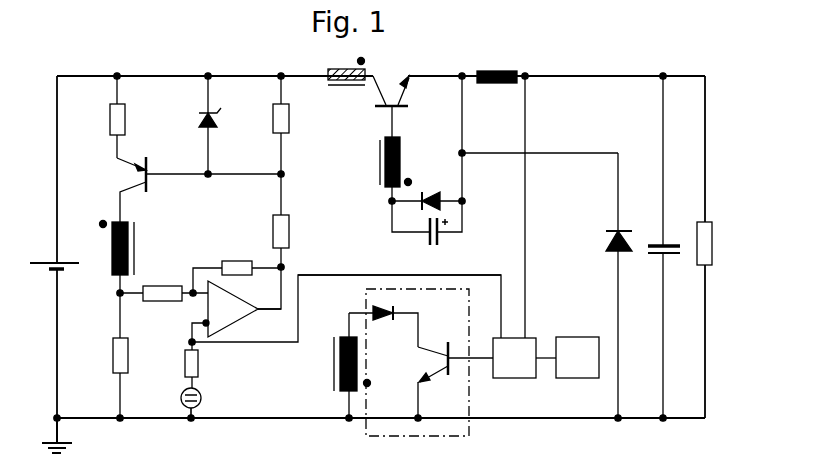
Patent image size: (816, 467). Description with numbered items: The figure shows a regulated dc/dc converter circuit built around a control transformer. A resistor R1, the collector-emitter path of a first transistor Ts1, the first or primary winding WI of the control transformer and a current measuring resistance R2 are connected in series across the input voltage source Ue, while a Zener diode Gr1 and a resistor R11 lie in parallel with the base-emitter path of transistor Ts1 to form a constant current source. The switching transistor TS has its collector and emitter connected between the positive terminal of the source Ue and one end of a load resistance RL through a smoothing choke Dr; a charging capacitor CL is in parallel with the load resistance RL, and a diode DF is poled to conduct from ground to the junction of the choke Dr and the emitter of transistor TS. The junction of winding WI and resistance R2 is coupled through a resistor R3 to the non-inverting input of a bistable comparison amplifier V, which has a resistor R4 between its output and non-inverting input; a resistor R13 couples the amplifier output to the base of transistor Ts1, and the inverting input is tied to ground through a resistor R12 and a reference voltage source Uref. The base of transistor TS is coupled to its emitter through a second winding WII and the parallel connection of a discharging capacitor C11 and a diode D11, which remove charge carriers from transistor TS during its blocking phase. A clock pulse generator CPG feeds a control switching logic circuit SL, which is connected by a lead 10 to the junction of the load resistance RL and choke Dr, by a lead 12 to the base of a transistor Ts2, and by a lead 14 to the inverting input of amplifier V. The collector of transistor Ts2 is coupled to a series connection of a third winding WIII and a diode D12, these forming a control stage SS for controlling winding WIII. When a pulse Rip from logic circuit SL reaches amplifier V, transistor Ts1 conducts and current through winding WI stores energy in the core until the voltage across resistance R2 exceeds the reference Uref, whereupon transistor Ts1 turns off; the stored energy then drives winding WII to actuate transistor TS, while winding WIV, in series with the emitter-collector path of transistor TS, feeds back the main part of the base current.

The input voltage source Ue is at (53, 252).
The resistor R1 is at (104, 115).
The first transistor Ts1 is at (199, 186).
The Zener diode Gr1 is at (193, 125).
The first or primary winding WI is at (129, 257).
The current measuring resistance R2 is at (108, 355).
The resistor R3 is at (164, 282).
The resistor R4 is at (237, 266).
The bistable comparison amplifier V is at (236, 311).
The resistor R12 is at (208, 363).
The reference voltage source Uref is at (209, 404).
The pulse Rip is at (346, 308).
The lead 14 is at (362, 275).
The resistor R11 is at (298, 125).
The resistor R13 is at (291, 241).
The winding WIV is at (347, 83).
The switching transistor TS is at (391, 95).
The second winding WII is at (377, 169).
The diode D11 is at (427, 192).
The discharging capacitor C11 is at (437, 229).
The smoothing choke Dr is at (502, 63).
The lead 10 is at (527, 229).
The diode DF is at (611, 287).
The charging capacitor CL is at (668, 247).
The load resistance RL is at (716, 243).
The control switching logic circuit SL is at (524, 358).
The clock pulse generator CPG is at (577, 357).
The control stage SS is at (383, 438).
The third winding WIII is at (366, 367).
The diode D12 is at (389, 321).
The transistor Ts2 is at (434, 381).
The lead 12 is at (481, 370).